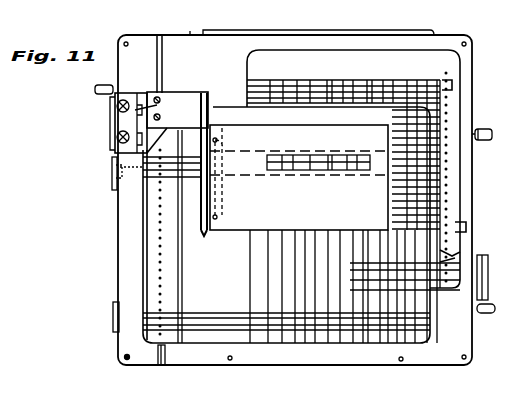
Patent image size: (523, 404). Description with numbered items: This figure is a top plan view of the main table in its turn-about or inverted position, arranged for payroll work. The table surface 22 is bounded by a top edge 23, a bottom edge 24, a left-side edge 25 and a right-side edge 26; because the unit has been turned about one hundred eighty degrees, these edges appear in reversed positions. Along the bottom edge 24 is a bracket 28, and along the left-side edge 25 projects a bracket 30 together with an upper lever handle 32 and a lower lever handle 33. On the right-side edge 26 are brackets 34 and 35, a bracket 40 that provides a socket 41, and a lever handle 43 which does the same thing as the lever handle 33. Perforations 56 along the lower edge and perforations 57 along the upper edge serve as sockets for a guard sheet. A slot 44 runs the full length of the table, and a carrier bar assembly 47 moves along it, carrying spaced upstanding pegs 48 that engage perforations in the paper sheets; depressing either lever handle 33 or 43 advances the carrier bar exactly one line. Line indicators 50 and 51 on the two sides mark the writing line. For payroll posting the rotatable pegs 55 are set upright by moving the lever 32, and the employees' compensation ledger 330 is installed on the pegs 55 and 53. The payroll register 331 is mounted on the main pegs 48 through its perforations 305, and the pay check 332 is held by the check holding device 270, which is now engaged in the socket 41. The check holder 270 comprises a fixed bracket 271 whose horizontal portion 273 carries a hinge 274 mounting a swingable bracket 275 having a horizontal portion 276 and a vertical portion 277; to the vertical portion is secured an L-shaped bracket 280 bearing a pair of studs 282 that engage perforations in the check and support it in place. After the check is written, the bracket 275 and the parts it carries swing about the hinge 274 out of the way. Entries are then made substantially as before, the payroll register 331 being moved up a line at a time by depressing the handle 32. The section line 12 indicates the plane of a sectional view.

The table surface 22 is at (470, 172).
The bracket 28 is at (300, 31).
The bottom edge 24 is at (188, 34).
The slot 44 is at (162, 36).
The perforations 56 is at (222, 43).
The employees' compensation ledger 330 is at (455, 68).
The pegs 55 is at (453, 85).
The payroll register 331 is at (286, 225).
The pegs 48 is at (160, 300).
The perforations 305 is at (161, 256).
The pay check 332 is at (299, 177).
The vertical portion 277 is at (208, 96).
The studs 282 is at (222, 180).
The L-shaped bracket 280 is at (218, 218).
The horizontal portion 273 is at (148, 76).
The swingable bracket 275 is at (147, 96).
The hinge 274 is at (160, 100).
The horizontal portion 276 is at (175, 121).
The socket 41 is at (112, 113).
The check holding device 270 is at (104, 129).
The bracket 40 is at (112, 140).
The fixed bracket 271 is at (112, 153).
The lever handle 43 is at (95, 89).
The bracket 35 is at (114, 189).
The line indicator 51 is at (120, 172).
The right-side edge 26 is at (118, 238).
The bracket 34 is at (115, 331).
The carrier bar assembly 47 is at (165, 352).
The perforations 57 is at (232, 357).
The top edge 23 is at (316, 364).
The section line 12 is at (95, 380).
The lower lever handle 33 is at (487, 128).
The left-side edge 25 is at (472, 185).
The line indicator 50 is at (463, 226).
The pegs 53 is at (448, 260).
The bracket 30 is at (478, 292).
The upper lever handle 32 is at (486, 309).